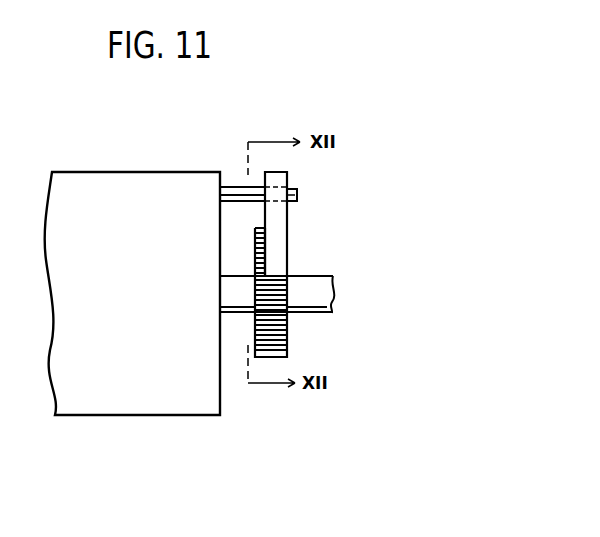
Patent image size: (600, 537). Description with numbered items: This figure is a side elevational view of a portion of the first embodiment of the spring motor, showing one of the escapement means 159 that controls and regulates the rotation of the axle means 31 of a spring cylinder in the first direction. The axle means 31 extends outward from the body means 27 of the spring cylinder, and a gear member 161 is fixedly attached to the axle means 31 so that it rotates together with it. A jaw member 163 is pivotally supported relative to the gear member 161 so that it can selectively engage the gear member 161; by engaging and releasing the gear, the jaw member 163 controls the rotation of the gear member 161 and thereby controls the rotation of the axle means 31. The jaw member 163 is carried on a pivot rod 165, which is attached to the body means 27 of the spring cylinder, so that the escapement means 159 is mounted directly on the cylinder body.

The body means 27 is at (155, 393).
The axle means 31 is at (323, 299).
The escapement means 159 is at (386, 243).
The gear member 161 is at (280, 343).
The jaw member 163 is at (283, 239).
The pivot rod 165 is at (235, 192).